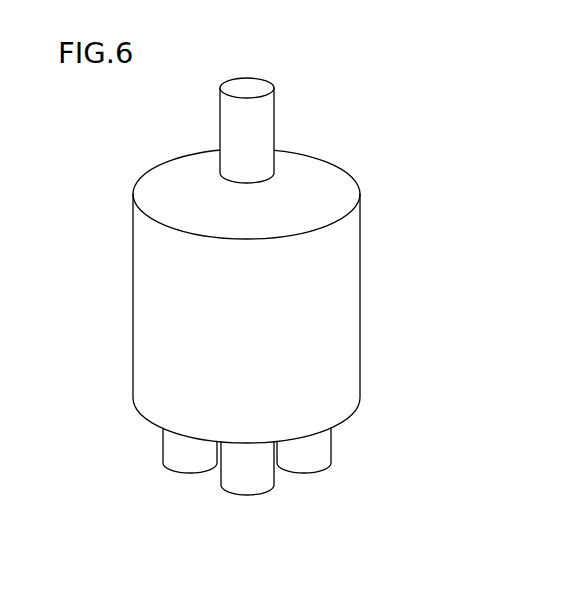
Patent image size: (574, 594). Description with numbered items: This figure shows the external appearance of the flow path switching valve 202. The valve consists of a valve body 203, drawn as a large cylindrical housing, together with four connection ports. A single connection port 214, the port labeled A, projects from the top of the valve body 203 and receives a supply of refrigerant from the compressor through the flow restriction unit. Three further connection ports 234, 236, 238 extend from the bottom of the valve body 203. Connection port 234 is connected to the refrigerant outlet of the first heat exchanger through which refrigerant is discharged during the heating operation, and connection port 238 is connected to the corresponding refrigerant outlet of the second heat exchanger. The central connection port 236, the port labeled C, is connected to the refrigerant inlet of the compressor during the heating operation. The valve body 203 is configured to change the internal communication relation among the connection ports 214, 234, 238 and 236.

The flow path switching valve 202 is at (363, 157).
The valve body 203 is at (133, 299).
The connection port 214 is at (220, 119).
The connection port 234 is at (172, 472).
The connection port 236 is at (227, 492).
The connection port 238 is at (323, 472).